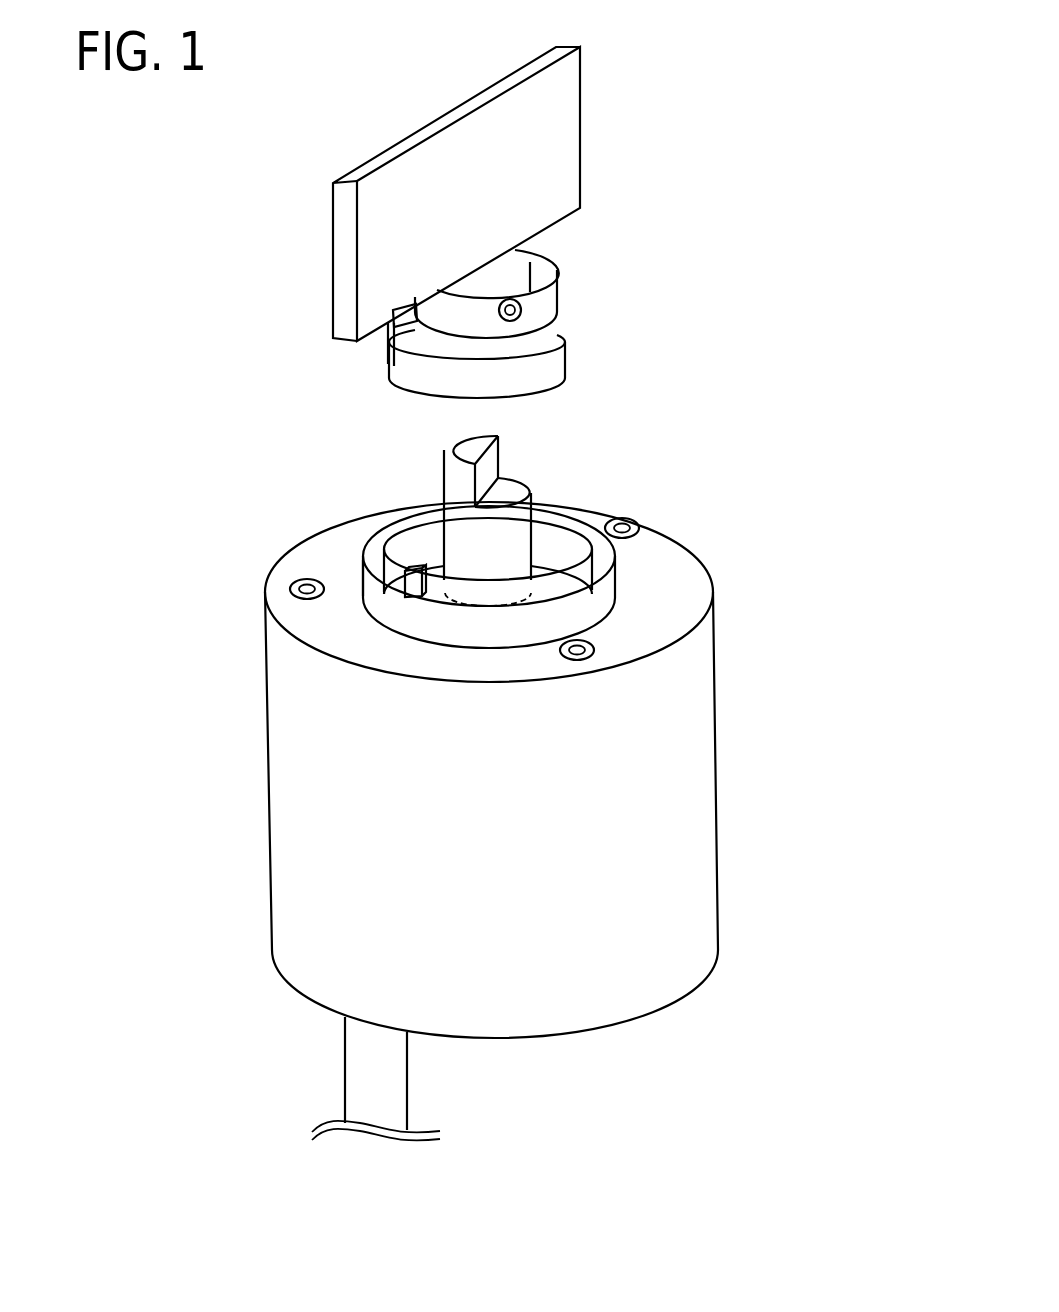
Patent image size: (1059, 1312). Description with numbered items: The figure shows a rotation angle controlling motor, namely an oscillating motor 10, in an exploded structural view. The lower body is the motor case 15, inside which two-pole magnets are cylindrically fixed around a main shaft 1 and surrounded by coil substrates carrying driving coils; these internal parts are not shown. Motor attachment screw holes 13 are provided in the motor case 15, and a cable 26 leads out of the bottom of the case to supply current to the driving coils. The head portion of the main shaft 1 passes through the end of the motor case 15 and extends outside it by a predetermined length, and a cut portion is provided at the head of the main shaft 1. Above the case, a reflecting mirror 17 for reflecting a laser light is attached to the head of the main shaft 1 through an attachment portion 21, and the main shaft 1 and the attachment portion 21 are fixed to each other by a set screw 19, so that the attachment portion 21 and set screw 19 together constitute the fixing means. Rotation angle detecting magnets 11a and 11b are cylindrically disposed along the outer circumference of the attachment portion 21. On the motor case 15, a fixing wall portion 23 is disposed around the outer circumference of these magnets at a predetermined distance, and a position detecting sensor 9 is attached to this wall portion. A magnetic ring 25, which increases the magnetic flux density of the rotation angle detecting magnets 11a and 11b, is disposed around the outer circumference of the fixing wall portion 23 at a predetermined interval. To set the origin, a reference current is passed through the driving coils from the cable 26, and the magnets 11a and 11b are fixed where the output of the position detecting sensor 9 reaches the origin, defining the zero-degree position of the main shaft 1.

The main shaft 1 is at (498, 460).
The position detecting sensor 9 is at (380, 570).
The oscillating motor 10 is at (797, 770).
The rotation angle detecting magnet 11a is at (552, 352).
The rotation angle detecting magnet 11b is at (388, 353).
The motor attachment screw holes 13 is at (637, 530).
The motor case 15 is at (717, 857).
The reflecting mirror 17 is at (582, 117).
The set screw 19 is at (521, 308).
The attachment portion 21 is at (517, 270).
The fixing wall portion 23 is at (410, 578).
The magnetic ring 25 is at (605, 597).
The cable 26 is at (407, 1082).